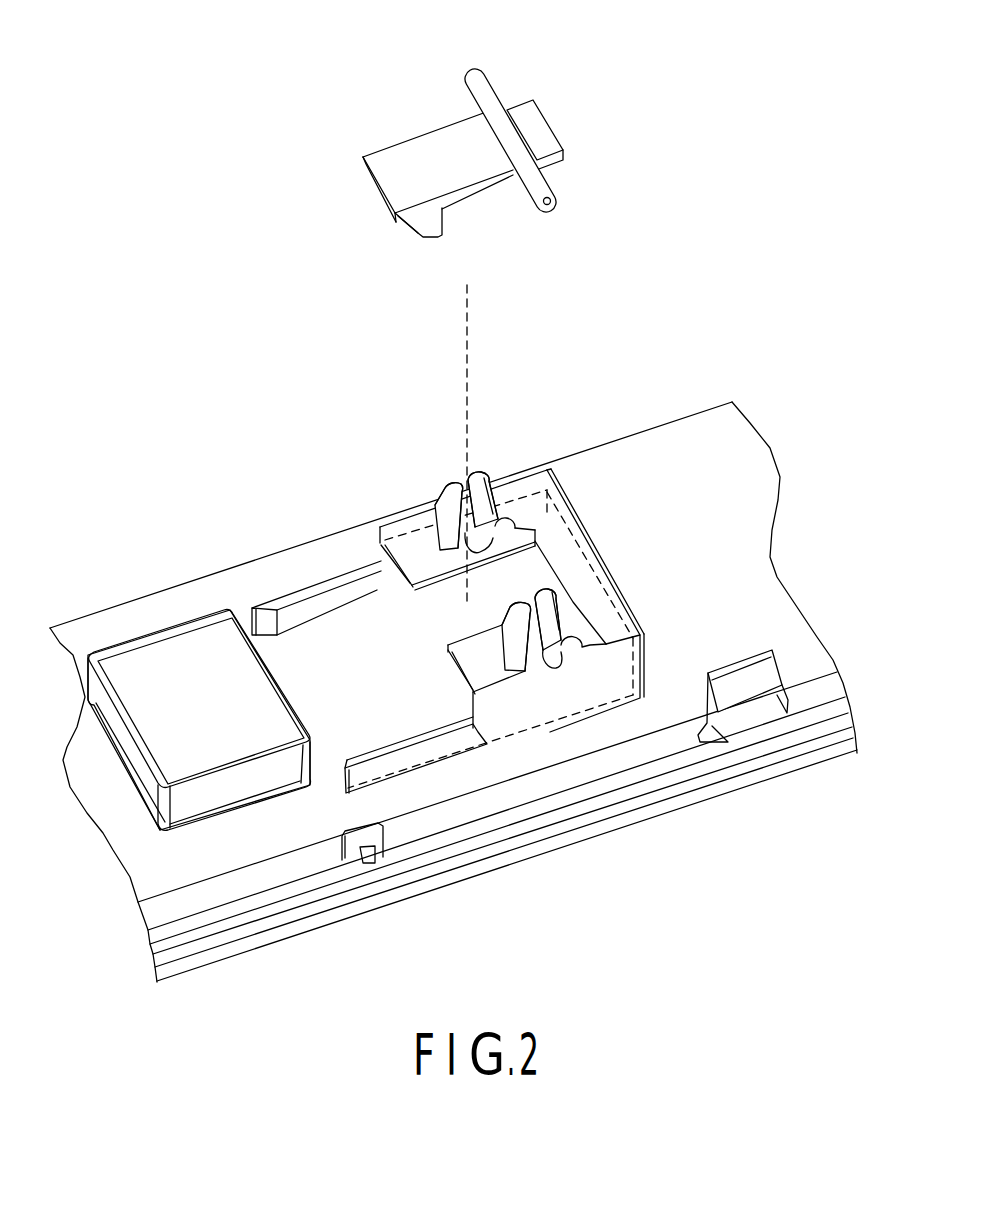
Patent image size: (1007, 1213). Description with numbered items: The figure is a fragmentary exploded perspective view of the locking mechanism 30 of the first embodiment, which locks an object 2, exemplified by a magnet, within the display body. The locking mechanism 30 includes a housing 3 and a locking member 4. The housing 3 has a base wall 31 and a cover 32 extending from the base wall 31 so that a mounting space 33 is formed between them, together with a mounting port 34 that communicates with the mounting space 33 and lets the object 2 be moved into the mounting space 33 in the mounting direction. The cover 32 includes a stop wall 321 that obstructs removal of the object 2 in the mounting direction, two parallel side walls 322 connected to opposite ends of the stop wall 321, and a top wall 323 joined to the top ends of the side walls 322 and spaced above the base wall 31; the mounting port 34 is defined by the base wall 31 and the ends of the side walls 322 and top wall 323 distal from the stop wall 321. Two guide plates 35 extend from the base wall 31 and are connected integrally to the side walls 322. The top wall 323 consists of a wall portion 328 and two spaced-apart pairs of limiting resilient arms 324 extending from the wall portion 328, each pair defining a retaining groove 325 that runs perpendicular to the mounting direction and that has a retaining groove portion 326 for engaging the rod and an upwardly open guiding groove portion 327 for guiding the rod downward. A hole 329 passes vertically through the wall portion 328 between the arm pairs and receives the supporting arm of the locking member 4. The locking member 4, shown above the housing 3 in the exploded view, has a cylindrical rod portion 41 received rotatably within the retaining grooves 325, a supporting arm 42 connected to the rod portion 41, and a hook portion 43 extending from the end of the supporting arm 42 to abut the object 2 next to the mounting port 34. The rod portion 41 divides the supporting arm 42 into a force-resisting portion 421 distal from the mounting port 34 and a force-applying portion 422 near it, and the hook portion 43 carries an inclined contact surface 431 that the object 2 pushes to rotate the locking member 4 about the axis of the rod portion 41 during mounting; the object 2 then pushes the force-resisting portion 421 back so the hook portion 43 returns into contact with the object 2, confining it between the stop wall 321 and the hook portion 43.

The object 2 is at (165, 655).
The housing 3 is at (453, 653).
The locking mechanism 30 is at (453, 498).
The base wall 31 is at (689, 438).
The cover 32 is at (580, 645).
The stop wall 321 is at (575, 560).
The side walls 322 is at (486, 474).
The top wall 323 is at (455, 668).
The limiting resilient arms 324 is at (651, 752).
The retaining groove 325 is at (568, 672).
The retaining groove portion 326 is at (565, 667).
The guiding groove portion 327 is at (560, 677).
The wall portion 328 is at (577, 622).
The hole 329 is at (527, 573).
The mounting space 33 is at (421, 628).
The mounting port 34 is at (461, 690).
The guide plates 35 is at (281, 608).
The locking member 4 is at (480, 159).
The rod portion 41 is at (487, 90).
The supporting arm 42 is at (517, 178).
The force-resisting portion 421 is at (560, 160).
The force-applying portion 422 is at (435, 148).
The hook portion 43 is at (380, 255).
The inclined contact surface 431 is at (405, 222).